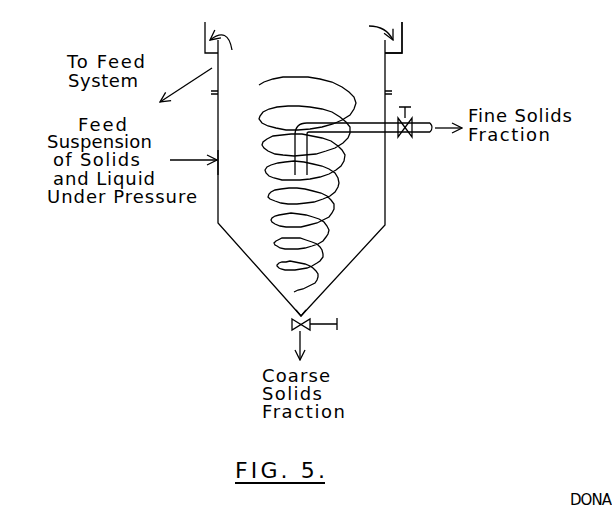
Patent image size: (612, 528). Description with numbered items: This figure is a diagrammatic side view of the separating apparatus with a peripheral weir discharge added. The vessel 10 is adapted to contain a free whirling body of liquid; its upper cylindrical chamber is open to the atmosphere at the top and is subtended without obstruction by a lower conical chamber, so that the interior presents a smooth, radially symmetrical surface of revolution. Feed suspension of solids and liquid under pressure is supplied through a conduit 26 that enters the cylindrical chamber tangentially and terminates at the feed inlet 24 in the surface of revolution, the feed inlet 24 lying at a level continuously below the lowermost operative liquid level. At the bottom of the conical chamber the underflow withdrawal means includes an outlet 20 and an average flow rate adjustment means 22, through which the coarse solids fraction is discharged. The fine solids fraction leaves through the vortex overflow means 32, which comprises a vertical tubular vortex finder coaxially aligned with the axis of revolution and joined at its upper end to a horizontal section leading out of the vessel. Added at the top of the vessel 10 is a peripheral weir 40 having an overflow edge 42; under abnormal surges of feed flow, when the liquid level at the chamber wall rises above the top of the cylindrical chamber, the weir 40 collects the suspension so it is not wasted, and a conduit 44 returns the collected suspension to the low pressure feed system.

The vessel 10 is at (425, 204).
The underflow outlet opening 20 is at (306, 316).
The average flow rate adjustment means 22 is at (311, 329).
The feed inlet 24 is at (218, 153).
The conduit 26 is at (203, 165).
The vortex overflow means 32 is at (386, 137).
The peripheral weir 40 is at (402, 33).
The overflow edge 42 is at (383, 33).
The conduit 44 is at (176, 88).